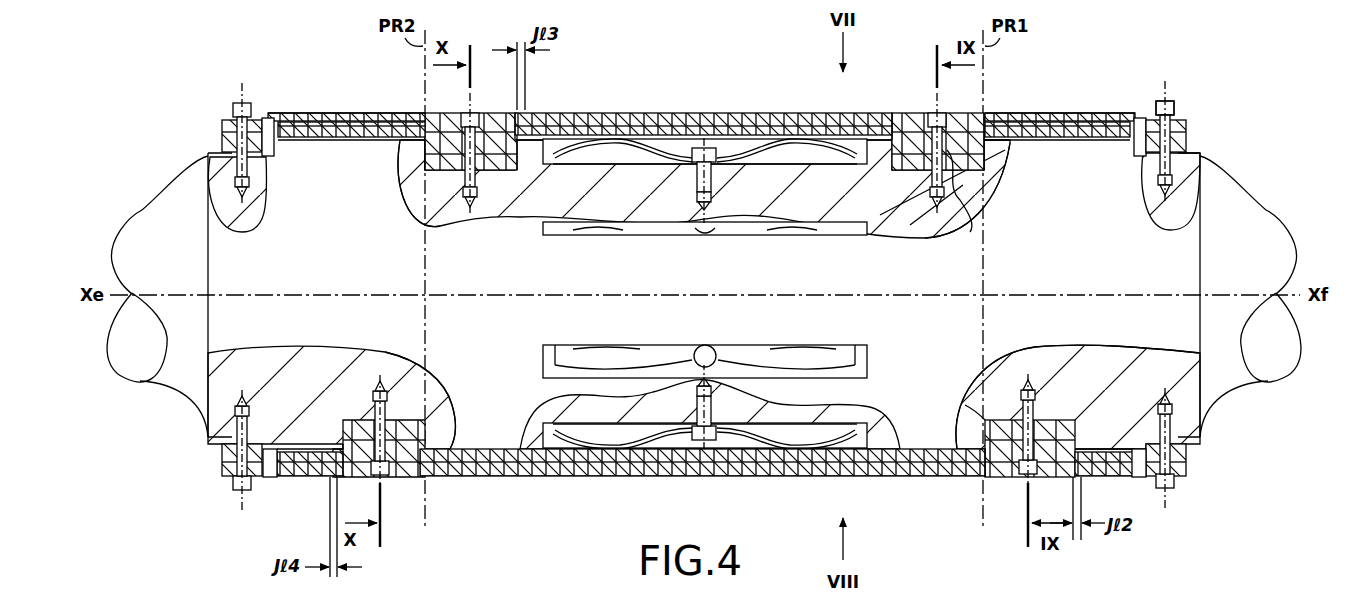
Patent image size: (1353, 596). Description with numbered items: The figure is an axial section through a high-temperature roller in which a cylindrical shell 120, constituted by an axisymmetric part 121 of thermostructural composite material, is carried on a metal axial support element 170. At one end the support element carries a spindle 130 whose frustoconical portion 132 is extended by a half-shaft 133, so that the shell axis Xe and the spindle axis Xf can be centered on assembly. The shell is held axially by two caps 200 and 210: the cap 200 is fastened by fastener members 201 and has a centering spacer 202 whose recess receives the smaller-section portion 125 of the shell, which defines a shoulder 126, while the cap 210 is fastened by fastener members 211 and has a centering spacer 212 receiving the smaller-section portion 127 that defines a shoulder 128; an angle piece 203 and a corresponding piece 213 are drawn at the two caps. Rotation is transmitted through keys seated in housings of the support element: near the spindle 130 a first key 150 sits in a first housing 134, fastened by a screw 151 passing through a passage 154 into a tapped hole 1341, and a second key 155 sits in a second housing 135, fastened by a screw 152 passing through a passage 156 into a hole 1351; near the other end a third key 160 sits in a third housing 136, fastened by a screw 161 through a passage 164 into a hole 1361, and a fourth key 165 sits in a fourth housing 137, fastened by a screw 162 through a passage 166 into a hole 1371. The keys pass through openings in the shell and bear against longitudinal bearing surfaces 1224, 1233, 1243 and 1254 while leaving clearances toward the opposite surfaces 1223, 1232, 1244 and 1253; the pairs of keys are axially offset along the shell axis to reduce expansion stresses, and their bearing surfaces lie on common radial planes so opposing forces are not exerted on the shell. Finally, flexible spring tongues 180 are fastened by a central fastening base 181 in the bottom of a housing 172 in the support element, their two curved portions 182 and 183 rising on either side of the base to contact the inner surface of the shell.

The cylindrical shell 120 is at (770, 110).
The axisymmetric part 121 is at (528, 477).
The smaller-section portion 125 is at (1090, 137).
The shoulder 126 is at (1025, 113).
The smaller-section portion 127 is at (320, 137).
The shoulder 128 is at (380, 113).
The spindle 130 is at (723, 271).
The frustoconical portion 132 is at (1245, 192).
The half-shaft 133 is at (1288, 240).
The first housing 134 is at (1000, 145).
The second housing 135 is at (1050, 372).
The third housing 136 is at (522, 150).
The fourth housing 137 is at (472, 400).
The first key 150 is at (912, 113).
The screw 151 is at (935, 165).
The screw 152 is at (1000, 432).
The passage 154 is at (960, 190).
The second key 155 is at (1010, 478).
The passage 156 is at (1000, 386).
The third key 160 is at (488, 113).
The screw 161 is at (465, 165).
The screw 162 is at (432, 432).
The passage 164 is at (508, 165).
The fourth key 165 is at (385, 478).
The passage 166 is at (425, 386).
The axial support element 170 is at (704, 294).
The housing 172 is at (790, 168).
The flexible spring tongue 180 is at (712, 146).
The central fastening base 181 is at (688, 150).
The curved portion 182 is at (602, 150).
The curved portion 183 is at (800, 150).
The cap 200 is at (1152, 100).
The fastener member 201 is at (1172, 106).
The centering spacer 202 is at (1068, 113).
The bracket 203 is at (1138, 122).
The cap 210 is at (245, 103).
The fastener member 211 is at (222, 128).
The centering spacer 212 is at (300, 113).
The bracket 213 is at (270, 158).
The first longitudinal bearing surface 1223 is at (890, 118).
The second longitudinal bearing surface 1224 is at (977, 118).
The second circumferential bearing surface 1232 is at (1078, 470).
The first longitudinal bearing surface 1233 is at (985, 470).
The first longitudinal bearing surface 1243 is at (425, 168).
The second longitudinal bearing surface 1244 is at (520, 113).
The first longitudinal bearing surface 1253 is at (340, 470).
The second longitudinal bearing surface 1254 is at (425, 470).
The hole 1341 is at (982, 225).
The hole 1351 is at (1000, 390).
The hole 1361 is at (468, 215).
The hole 1371 is at (402, 375).